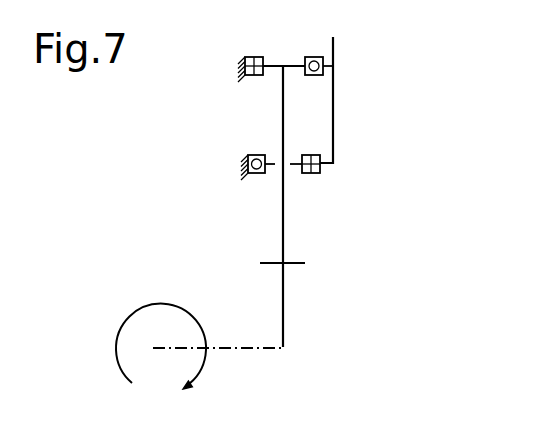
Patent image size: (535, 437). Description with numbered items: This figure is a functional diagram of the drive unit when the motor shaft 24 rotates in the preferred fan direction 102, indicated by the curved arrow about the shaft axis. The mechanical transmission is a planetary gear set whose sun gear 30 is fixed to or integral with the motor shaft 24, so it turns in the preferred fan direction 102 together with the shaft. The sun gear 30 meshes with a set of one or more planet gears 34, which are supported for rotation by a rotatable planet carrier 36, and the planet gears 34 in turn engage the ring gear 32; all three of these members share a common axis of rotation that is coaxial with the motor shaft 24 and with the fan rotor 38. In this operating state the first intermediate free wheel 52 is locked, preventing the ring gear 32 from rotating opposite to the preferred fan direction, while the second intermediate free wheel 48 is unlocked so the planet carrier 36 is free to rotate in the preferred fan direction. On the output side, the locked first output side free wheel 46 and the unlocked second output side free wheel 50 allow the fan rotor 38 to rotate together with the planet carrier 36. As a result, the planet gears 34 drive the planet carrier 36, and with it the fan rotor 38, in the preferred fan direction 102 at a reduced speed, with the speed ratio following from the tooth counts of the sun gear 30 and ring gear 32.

The sun gear 30 is at (284, 303).
The ring gear 32 is at (290, 65).
The planet gears 34 is at (284, 233).
The planet carrier 36 is at (290, 167).
The fan rotor 38 is at (335, 117).
The first output side free wheel 46 is at (320, 168).
The second intermediate free wheel 48 is at (242, 160).
The second output side free wheel 50 is at (335, 66).
The first intermediate free wheel 52 is at (244, 75).
The motor shaft 24 is at (243, 348).
The preferred fan direction 102 is at (160, 303).